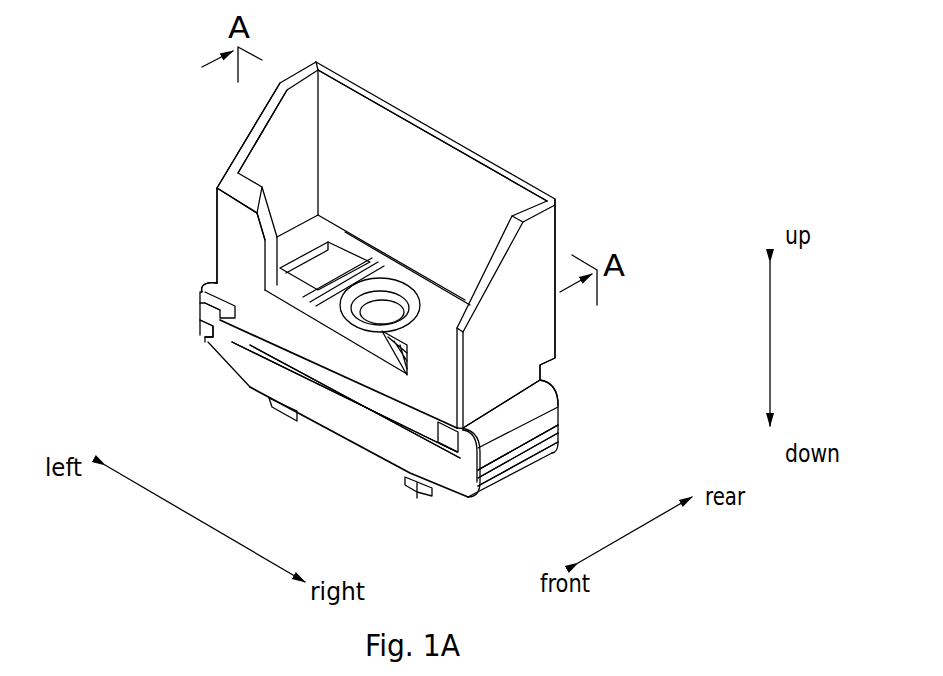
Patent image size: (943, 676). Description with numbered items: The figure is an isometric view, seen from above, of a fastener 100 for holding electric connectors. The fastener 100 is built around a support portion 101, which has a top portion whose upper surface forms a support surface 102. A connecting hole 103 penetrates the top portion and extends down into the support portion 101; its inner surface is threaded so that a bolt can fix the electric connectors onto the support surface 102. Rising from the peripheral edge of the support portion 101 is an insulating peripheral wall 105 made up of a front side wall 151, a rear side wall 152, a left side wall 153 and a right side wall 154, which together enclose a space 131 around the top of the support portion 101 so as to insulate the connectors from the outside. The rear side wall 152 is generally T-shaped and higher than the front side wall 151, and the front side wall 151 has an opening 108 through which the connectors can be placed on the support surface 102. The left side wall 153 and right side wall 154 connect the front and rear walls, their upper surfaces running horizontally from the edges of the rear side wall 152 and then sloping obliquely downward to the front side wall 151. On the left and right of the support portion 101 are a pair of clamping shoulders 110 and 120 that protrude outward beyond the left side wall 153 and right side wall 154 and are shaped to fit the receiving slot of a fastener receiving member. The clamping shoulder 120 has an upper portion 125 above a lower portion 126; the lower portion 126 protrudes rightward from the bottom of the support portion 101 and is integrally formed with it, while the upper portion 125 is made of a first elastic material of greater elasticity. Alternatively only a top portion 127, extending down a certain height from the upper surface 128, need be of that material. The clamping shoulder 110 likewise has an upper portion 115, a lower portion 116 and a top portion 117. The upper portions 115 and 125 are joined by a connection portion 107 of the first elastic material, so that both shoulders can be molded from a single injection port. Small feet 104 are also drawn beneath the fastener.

The fastener 100 is at (632, 108).
The support portion 101 is at (310, 402).
The support surface 102 is at (368, 252).
The connecting hole 103 is at (358, 305).
The positioning foot 104 is at (278, 406).
The insulating peripheral wall 105 is at (480, 197).
The connection portion 107 is at (367, 412).
The opening 108 is at (307, 308).
The clamping shoulder 110 is at (198, 307).
The upper portion 115 is at (198, 288).
The lower portion 116 is at (207, 337).
The top portion 117 is at (215, 278).
The clamping shoulder 120 is at (588, 470).
The upper portion 125 is at (465, 462).
The lower portion 126 is at (465, 488).
The top portion 127 is at (510, 411).
The upper surface 128 is at (544, 384).
The space 131 is at (430, 243).
The front side wall 151 is at (237, 233).
The rear side wall 152 is at (342, 118).
The left side wall 153 is at (275, 142).
The right side wall 154 is at (542, 330).